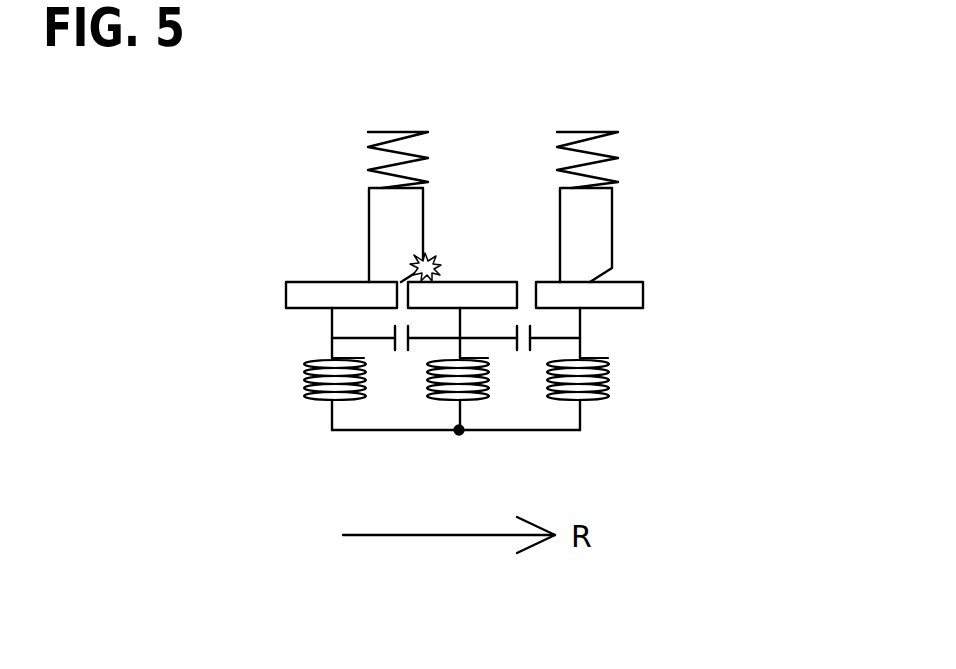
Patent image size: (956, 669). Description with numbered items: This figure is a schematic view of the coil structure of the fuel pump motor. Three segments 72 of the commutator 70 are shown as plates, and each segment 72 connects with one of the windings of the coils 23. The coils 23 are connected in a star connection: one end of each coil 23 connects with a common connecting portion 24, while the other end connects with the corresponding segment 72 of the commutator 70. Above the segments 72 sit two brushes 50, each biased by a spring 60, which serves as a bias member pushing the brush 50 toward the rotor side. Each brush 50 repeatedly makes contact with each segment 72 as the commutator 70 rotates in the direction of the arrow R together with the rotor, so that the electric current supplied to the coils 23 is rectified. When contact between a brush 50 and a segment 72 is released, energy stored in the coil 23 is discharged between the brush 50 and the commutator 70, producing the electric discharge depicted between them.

The spring 60 is at (417, 157).
The brush 50 is at (368, 189).
The segment 72 is at (297, 282).
The commutator 70 is at (680, 300).
The coil 23 is at (304, 373).
The connecting portion 24 is at (462, 435).